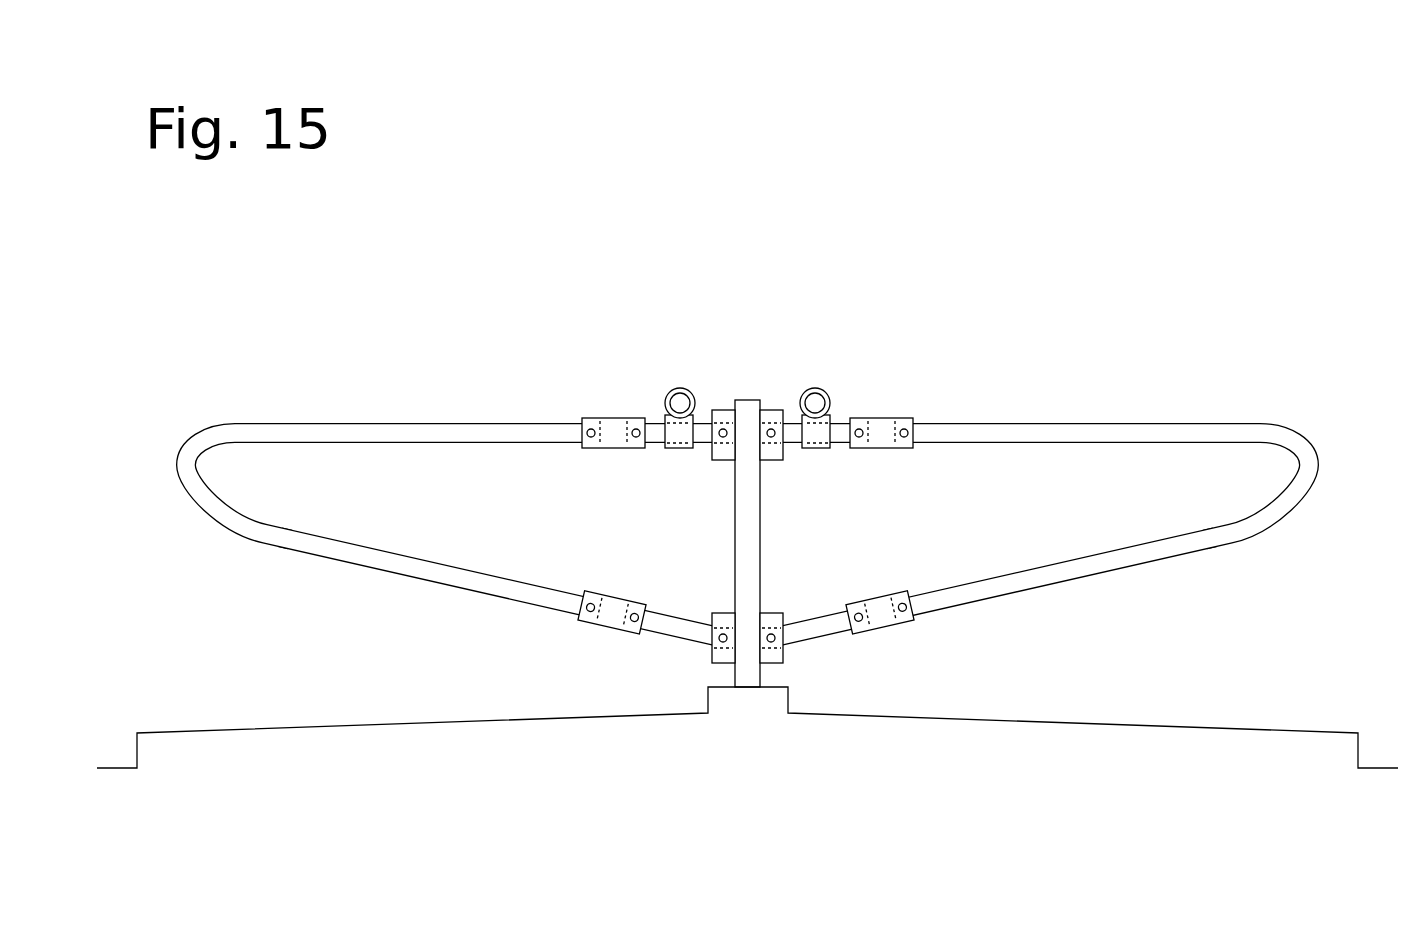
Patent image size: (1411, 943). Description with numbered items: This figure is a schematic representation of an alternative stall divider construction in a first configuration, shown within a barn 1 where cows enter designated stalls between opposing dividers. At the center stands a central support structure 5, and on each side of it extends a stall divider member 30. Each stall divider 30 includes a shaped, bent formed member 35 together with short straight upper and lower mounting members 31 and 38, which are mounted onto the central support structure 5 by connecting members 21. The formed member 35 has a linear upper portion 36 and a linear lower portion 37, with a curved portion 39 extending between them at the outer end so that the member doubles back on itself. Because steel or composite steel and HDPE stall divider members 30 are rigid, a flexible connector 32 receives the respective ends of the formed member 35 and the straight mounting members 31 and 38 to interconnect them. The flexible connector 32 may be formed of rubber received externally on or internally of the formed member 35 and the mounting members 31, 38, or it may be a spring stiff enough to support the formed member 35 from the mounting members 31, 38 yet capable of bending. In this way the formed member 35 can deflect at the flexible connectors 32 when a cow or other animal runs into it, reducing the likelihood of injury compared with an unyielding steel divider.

The barn 1 is at (1100, 718).
The central support structure 5 is at (750, 527).
The connecting members 21 is at (763, 410).
The stall divider member 30 is at (258, 314).
The upper mounting member 31 is at (700, 412).
The flexible connector 32 is at (608, 418).
The formed member 35 is at (205, 440).
The linear upper portion 36 is at (402, 422).
The linear lower portion 37 is at (527, 578).
The lower mounting member 38 is at (688, 637).
The curved portion 39 is at (202, 480).